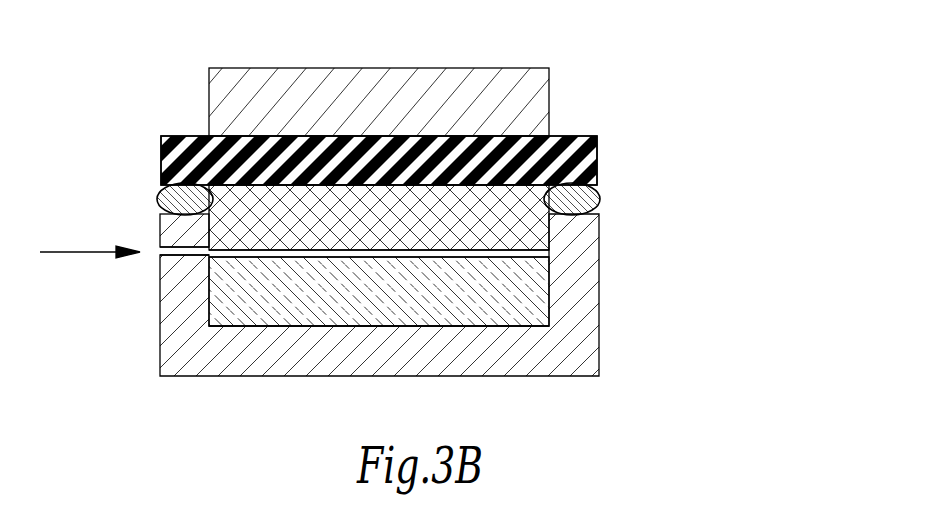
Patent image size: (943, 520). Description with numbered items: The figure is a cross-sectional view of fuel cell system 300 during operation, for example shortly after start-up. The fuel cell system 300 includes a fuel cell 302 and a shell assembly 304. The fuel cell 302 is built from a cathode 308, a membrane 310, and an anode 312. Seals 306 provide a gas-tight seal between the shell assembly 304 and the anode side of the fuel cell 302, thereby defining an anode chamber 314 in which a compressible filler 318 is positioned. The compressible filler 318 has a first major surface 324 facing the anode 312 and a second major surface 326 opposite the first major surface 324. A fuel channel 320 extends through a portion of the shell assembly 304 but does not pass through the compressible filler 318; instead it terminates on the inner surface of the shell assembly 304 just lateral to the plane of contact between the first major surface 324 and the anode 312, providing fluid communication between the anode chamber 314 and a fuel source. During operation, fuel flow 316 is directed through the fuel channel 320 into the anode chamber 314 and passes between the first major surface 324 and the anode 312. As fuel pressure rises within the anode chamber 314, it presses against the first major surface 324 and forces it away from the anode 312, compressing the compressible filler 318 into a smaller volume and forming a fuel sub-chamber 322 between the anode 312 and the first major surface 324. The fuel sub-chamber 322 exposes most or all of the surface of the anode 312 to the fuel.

The fuel cell system 300 is at (713, 102).
The fuel cell 302 is at (161, 156).
The shell assembly 304 is at (600, 264).
The seals 306 is at (157, 199).
The cathode 308 is at (549, 102).
The membrane 310 is at (597, 161).
The anode 312 is at (530, 238).
The anode chamber 314 is at (505, 328).
The fuel flow 316 is at (80, 256).
The compressible filler 318 is at (530, 308).
The fuel channel 320 is at (177, 250).
The fuel sub-chamber 322 is at (477, 255).
The first major surface 324 is at (290, 257).
The second major surface 326 is at (418, 327).